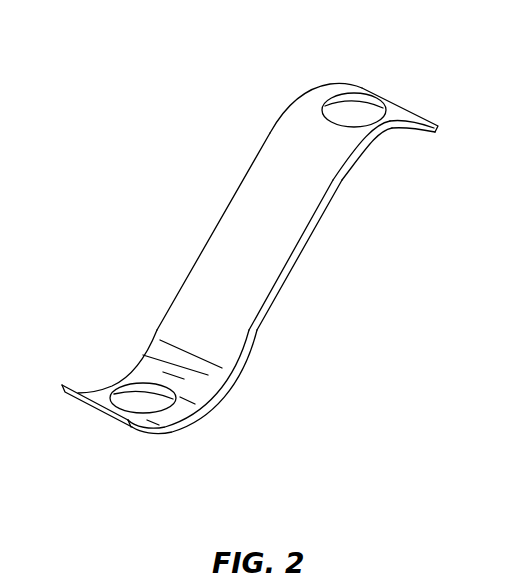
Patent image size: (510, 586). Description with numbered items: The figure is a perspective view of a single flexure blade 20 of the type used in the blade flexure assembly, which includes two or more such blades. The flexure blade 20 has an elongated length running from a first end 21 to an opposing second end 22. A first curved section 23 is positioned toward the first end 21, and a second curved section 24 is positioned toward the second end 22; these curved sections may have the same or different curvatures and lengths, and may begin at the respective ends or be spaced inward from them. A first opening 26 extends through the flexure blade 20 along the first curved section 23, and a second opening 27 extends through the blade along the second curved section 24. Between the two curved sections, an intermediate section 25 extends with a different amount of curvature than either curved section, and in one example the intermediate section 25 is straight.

The flexure blade 20 is at (123, 208).
The first end 21 is at (440, 129).
The second end 22 is at (88, 410).
The first curved section 23 is at (292, 88).
The second curved section 24 is at (212, 417).
The intermediate section 25 is at (263, 213).
The first opening 26 is at (350, 112).
The second opening 27 is at (143, 400).